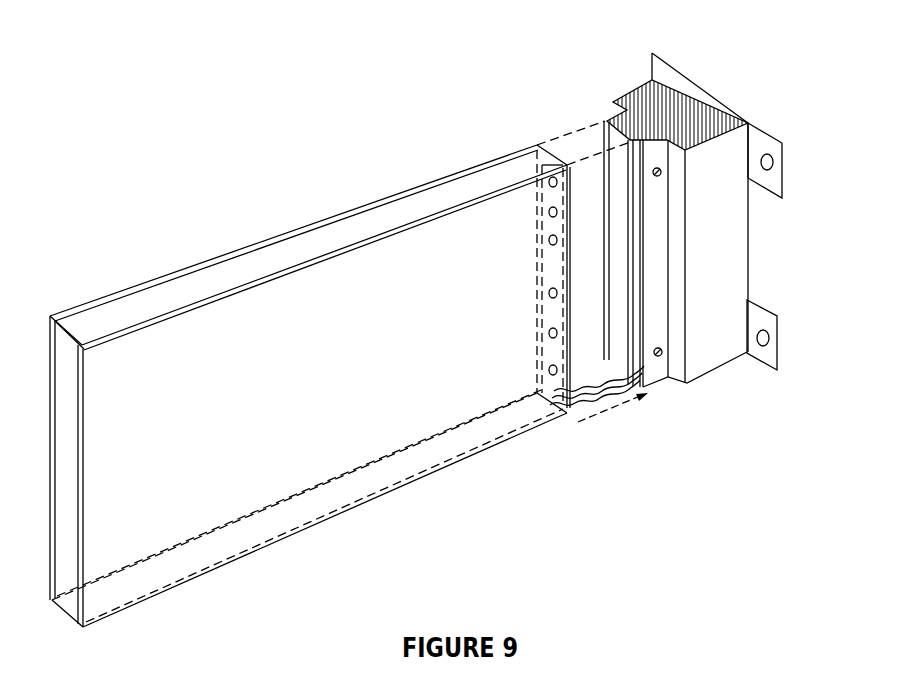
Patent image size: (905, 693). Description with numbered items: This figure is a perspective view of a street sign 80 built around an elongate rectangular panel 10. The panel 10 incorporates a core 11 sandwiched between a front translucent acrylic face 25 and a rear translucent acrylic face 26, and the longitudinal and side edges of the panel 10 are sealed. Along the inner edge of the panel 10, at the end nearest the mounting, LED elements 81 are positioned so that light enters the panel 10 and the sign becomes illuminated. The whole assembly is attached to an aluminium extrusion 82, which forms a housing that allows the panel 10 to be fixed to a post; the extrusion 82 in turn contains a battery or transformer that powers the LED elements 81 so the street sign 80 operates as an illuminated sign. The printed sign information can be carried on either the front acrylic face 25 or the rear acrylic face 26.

The elongate rectangular panel 10 is at (420, 335).
The core 11 is at (345, 235).
The front translucent acrylic face 25 is at (305, 230).
The rear translucent acrylic face 26 is at (336, 252).
The street sign 80 is at (447, 113).
The LED elements 81 is at (547, 291).
The aluminium extrusion 82 is at (722, 243).